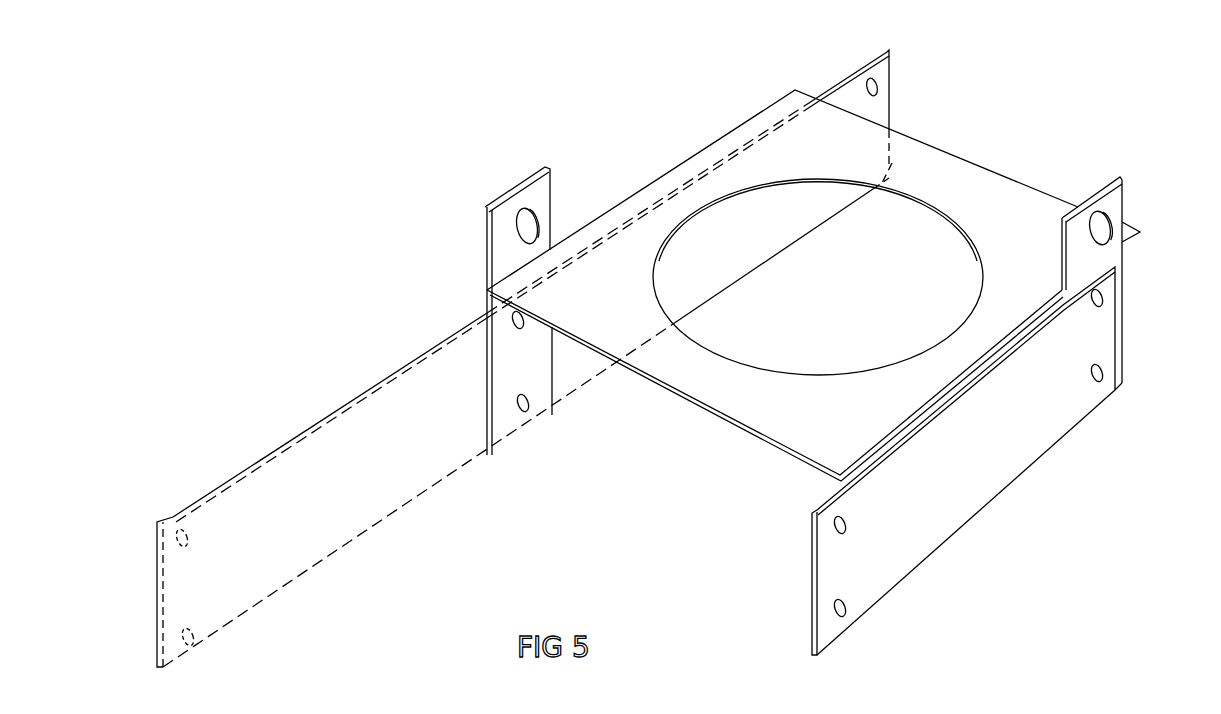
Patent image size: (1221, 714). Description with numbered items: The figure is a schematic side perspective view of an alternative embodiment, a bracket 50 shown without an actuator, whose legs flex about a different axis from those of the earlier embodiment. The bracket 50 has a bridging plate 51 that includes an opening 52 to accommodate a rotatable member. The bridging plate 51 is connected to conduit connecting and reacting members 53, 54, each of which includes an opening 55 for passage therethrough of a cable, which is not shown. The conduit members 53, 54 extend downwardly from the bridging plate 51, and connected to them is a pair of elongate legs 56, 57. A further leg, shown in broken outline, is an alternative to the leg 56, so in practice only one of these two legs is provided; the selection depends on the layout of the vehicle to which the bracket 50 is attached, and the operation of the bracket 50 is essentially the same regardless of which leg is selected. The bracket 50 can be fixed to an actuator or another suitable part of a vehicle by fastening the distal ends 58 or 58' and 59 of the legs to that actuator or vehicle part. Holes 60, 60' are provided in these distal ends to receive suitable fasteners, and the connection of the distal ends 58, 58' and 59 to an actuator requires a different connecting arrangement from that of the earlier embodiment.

The bracket 50 is at (629, 357).
The bridging plate 51 is at (782, 285).
The opening 52 is at (768, 377).
The conduit connecting and reacting member 53 is at (487, 235).
The conduit connecting and reacting member 54 is at (1125, 183).
The opening 55 is at (523, 215).
The elongate leg 56 is at (840, 83).
The elongate leg 57 is at (905, 545).
The distal end 58 is at (927, 116).
The distal end 59 is at (825, 568).
The hole 60 is at (807, 359).
The distal end 58' is at (117, 592).
The hole 60' is at (201, 569).